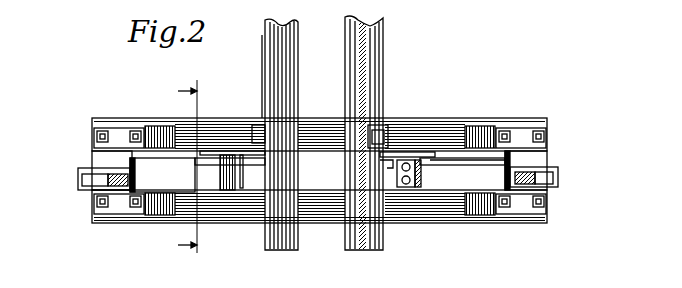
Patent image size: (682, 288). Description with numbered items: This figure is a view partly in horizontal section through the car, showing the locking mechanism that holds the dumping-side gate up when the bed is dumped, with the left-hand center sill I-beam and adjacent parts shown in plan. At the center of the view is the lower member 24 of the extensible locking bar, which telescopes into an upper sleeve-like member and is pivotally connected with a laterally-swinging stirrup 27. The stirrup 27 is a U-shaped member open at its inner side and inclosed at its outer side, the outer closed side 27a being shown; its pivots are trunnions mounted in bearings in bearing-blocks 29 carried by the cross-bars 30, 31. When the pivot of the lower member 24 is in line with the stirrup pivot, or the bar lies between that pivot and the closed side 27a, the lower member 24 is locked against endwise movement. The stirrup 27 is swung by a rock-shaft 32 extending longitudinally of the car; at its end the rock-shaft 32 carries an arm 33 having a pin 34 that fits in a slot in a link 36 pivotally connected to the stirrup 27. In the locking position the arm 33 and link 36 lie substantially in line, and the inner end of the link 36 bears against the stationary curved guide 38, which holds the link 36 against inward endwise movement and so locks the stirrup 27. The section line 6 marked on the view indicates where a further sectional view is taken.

The section line 6- 6 is at (187, 167).
The lower member 24 is at (108, 179).
The stirrup 27 is at (92, 167).
The closed side of the stirrup 27a is at (565, 171).
The bearing-blocks 29 is at (113, 133).
The cross-bar 30 is at (209, 126).
The cross-bar 31 is at (241, 212).
The rock-shaft 32 is at (263, 60).
The arm 33 is at (238, 151).
The pin 34 is at (205, 172).
The link 36 is at (163, 160).
The stationary curved guide 38 is at (398, 168).